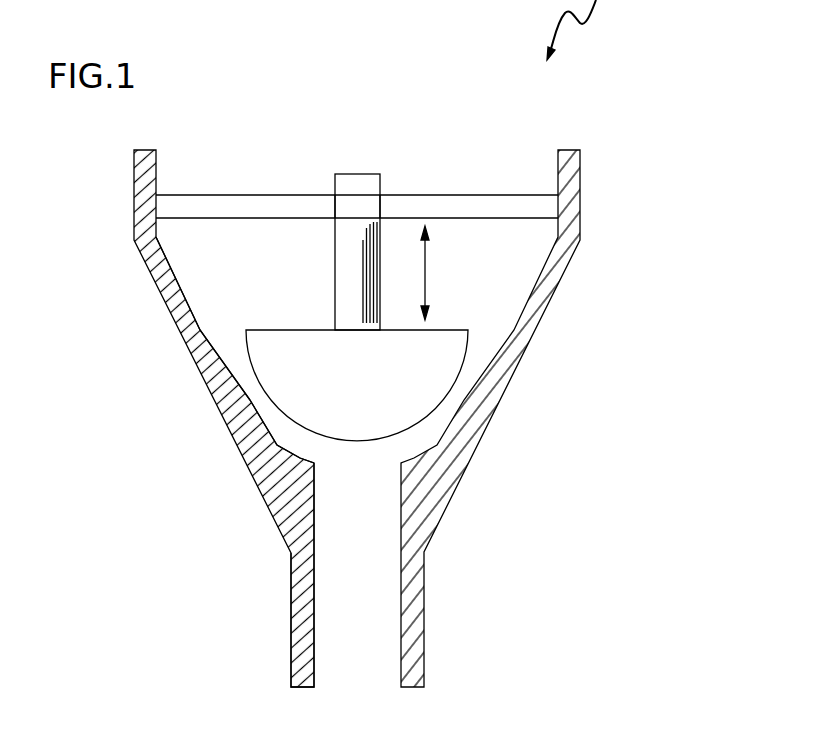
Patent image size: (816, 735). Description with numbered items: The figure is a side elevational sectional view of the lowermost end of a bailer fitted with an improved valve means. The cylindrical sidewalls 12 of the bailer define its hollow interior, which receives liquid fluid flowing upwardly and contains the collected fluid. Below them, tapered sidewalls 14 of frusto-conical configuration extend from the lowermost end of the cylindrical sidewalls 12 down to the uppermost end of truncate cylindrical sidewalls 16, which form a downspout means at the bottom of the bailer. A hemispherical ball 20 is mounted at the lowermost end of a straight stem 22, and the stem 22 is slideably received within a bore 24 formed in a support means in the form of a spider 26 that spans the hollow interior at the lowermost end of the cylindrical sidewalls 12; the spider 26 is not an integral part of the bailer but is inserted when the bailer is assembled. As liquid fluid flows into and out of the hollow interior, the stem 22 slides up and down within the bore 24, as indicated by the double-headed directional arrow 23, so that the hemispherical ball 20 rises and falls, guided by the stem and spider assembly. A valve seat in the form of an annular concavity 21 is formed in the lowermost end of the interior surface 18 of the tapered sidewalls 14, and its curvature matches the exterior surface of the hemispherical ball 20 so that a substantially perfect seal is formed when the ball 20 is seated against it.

The cylindrical sidewalls 12 is at (580, 183).
The tapered sidewalls 14 is at (156, 285).
The truncate cylindrical sidewalls 16 is at (292, 611).
The interior surface 18 is at (192, 305).
The hemispherical ball 20 is at (376, 382).
The annular concavity 21 is at (270, 447).
The stem 22 is at (380, 238).
The double-headed directional arrow 23 is at (425, 273).
The bore 24 is at (336, 206).
The spider 26 is at (245, 195).